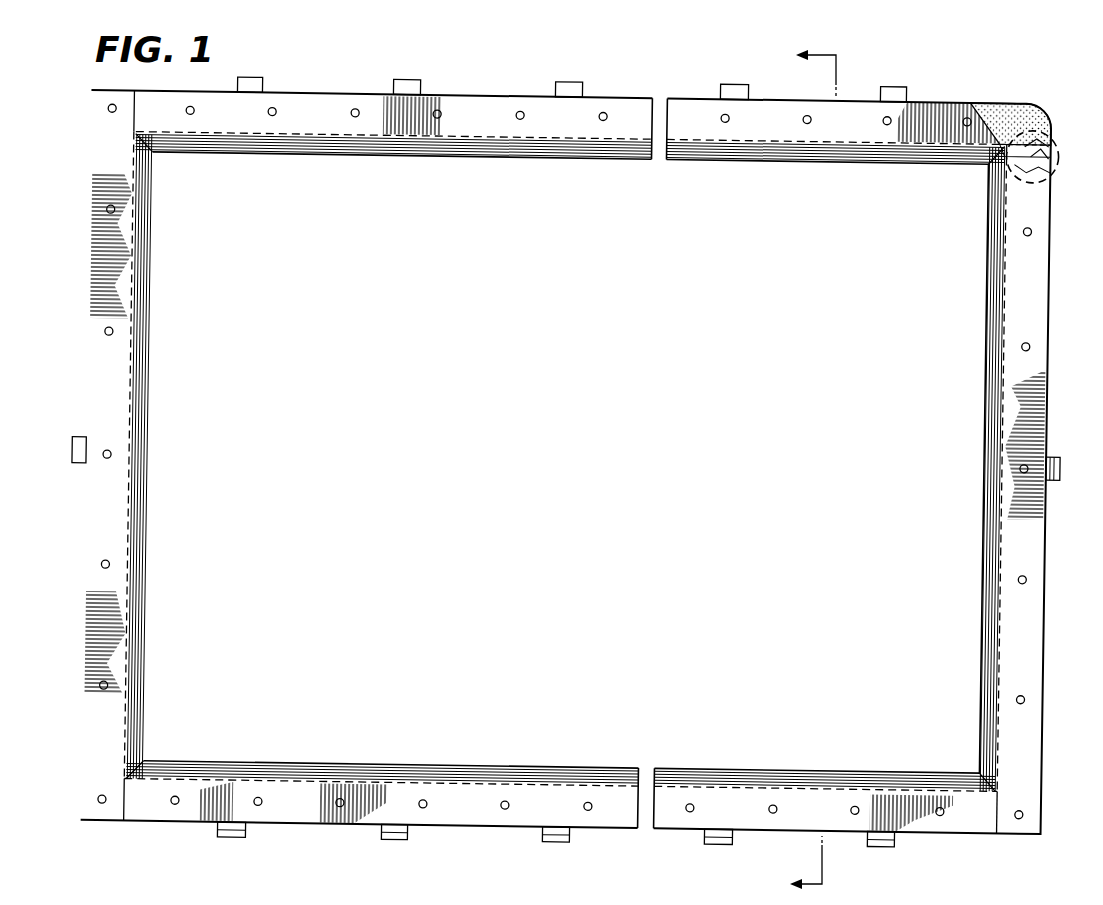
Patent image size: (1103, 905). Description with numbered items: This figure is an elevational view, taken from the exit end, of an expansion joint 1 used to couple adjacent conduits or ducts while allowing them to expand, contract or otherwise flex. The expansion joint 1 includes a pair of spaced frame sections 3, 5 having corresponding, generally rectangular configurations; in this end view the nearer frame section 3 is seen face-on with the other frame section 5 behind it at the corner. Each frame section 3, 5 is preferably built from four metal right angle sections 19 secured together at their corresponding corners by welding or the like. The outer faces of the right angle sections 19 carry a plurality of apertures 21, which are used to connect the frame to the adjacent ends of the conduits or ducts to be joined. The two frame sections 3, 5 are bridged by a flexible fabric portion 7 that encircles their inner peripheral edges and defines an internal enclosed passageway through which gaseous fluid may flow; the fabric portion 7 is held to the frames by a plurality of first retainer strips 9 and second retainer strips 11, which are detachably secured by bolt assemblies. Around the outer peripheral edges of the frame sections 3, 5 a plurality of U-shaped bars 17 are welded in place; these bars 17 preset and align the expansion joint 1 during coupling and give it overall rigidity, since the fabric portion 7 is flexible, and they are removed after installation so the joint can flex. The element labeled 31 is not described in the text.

The expansion joint 1 is at (1064, 228).
The frame section 3 is at (1048, 436).
The frame section 5 is at (1009, 145).
The fabric portion 7 is at (1008, 78).
The first retainer strip 9 is at (1049, 118).
The second retainer strip 11 is at (1050, 152).
The U-shaped bar 17 is at (573, 82).
The metal right angle section 19 is at (415, 122).
The aperture 21 is at (438, 104).
The panel edge 31 is at (318, 154).